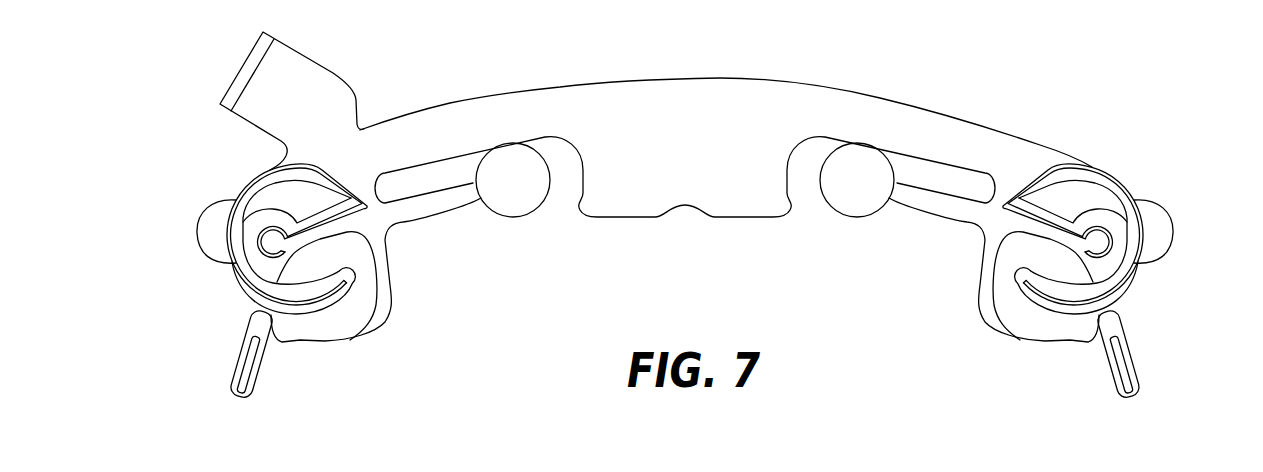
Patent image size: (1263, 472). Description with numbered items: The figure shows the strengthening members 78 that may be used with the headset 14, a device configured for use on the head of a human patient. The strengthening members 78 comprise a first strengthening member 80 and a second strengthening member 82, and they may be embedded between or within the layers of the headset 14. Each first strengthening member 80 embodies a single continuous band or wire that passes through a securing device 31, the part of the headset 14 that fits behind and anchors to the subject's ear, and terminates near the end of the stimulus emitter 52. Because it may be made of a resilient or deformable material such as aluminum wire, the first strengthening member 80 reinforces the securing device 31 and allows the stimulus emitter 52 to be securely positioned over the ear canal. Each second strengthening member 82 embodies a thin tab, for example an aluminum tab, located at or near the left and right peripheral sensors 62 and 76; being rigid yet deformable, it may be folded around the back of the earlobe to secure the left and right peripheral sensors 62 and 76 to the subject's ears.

The headset 14 is at (745, 233).
The securing device 31 is at (216, 250).
The stimulus emitter 52 is at (250, 207).
The left peripheral sensor 62 is at (297, 349).
The right peripheral sensor 76 is at (1078, 350).
The strengthening members 78 is at (352, 296).
The first strengthening member 80 is at (253, 180).
The second strengthening member 82 is at (236, 368).